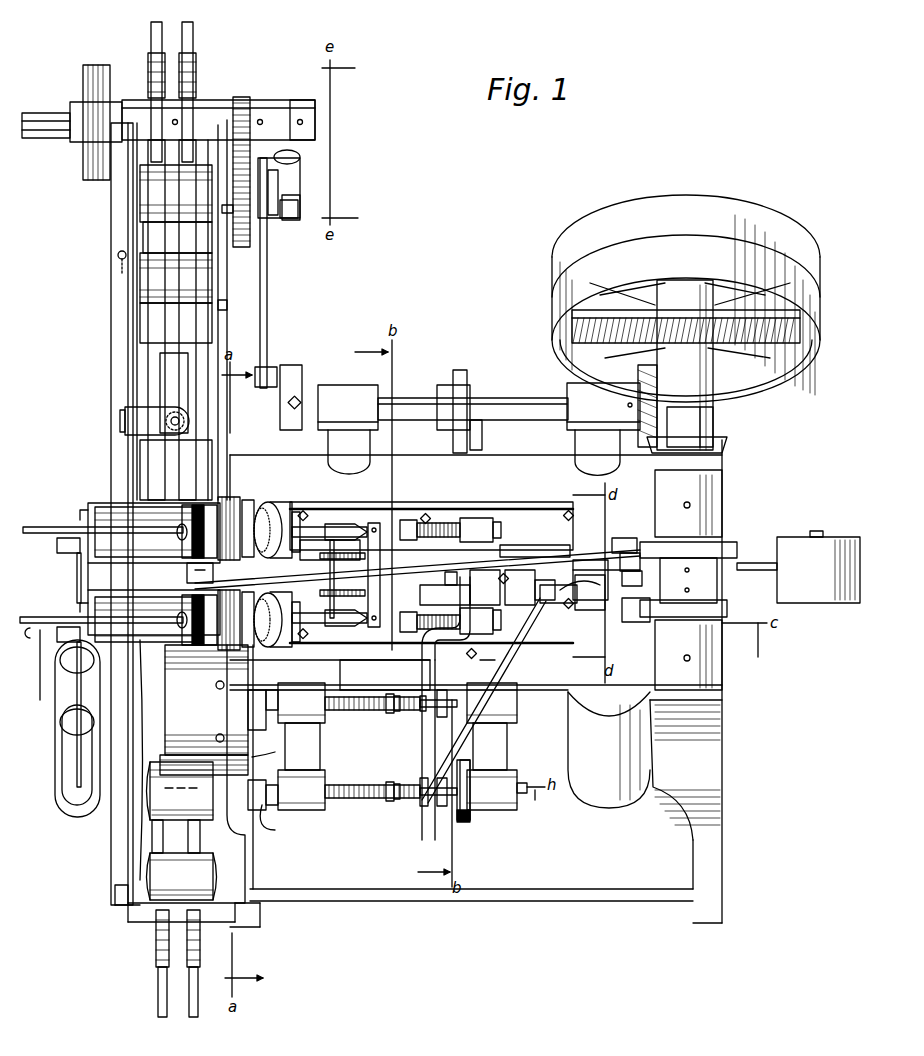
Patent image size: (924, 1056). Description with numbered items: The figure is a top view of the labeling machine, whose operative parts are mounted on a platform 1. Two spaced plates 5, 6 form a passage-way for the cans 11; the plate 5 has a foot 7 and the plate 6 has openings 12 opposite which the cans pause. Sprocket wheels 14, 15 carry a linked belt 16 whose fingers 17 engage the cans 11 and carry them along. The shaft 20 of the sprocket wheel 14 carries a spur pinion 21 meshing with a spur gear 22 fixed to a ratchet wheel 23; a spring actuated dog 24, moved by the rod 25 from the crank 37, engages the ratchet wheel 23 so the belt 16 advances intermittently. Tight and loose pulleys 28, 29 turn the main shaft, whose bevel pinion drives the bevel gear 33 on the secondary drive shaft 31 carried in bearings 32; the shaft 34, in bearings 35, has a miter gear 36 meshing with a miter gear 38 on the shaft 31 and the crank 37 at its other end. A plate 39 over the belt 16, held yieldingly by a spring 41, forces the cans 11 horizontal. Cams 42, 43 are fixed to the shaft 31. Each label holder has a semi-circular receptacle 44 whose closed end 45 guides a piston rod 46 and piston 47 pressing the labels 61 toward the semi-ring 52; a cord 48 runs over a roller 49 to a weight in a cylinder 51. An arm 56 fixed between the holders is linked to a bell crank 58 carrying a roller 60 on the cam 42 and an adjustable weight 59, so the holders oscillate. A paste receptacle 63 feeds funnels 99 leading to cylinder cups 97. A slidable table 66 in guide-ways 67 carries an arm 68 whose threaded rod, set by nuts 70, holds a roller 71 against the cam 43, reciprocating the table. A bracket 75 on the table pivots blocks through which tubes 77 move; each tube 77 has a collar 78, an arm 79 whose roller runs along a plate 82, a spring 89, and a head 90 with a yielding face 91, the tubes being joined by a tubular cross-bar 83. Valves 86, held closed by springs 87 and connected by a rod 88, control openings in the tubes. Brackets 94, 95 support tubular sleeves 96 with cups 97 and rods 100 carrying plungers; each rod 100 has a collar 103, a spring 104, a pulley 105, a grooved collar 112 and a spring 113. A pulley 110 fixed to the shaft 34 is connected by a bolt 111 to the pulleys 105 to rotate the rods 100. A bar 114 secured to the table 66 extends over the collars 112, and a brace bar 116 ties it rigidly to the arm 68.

The platform 1 is at (476, 681).
The plate 5 is at (125, 358).
The plate 6 is at (222, 318).
The foot 7 is at (140, 238).
The cans 11 is at (182, 831).
The openings 12 is at (232, 822).
The sprocket wheel 14 is at (192, 88).
The sprocket wheel 15 is at (156, 938).
The linked belt 16 is at (196, 60).
The fingers 17 is at (193, 30).
The shaft 20 is at (315, 120).
The spur pinion 21 is at (243, 97).
The spur gear 22 is at (237, 235).
The ratchet wheel 23 is at (292, 220).
The spring actuated dog 24 is at (300, 178).
The rod 25 is at (274, 273).
The tight pulley 28 is at (686, 295).
The loose pulley 29 is at (686, 321).
The secondary drive shaft 31 is at (713, 420).
The bearings 32 is at (713, 378).
The bevel gear 33 is at (572, 334).
The shaft 34 is at (530, 398).
The bearings 35 is at (479, 421).
The miter gear 36 is at (636, 404).
The crank 37 is at (292, 365).
The miter gear 38 is at (727, 443).
The plate 39 is at (174, 393).
The spring 41 is at (175, 417).
The cam 42 is at (737, 545).
The cam 43 is at (727, 608).
The semi-circular receptacle 44 is at (97, 503).
The closed end 45 is at (80, 513).
The piston rod 46 is at (101, 565).
The piston 47 is at (186, 545).
The cord 48 is at (77, 568).
The roller 49 is at (52, 618).
The cylinder 51 is at (70, 700).
The semi-ring 52 is at (240, 500).
The arm 56 is at (185, 575).
The bell crank 58 is at (751, 578).
The weight 59 is at (815, 603).
The roller 60 is at (627, 538).
The labels 61 is at (147, 574).
The paste receptacle 63 is at (204, 710).
The slidable table 66 is at (590, 530).
The guide-ways 67 is at (417, 569).
The arm 68 is at (572, 592).
The nuts 70 is at (537, 595).
The roller 71 is at (636, 622).
The bracket 75 is at (445, 593).
The tubes 77 is at (472, 503).
The collar 78 is at (510, 519).
The arm 79 is at (412, 512).
The plate 82 is at (352, 510).
The tubular cross-bar 83 is at (373, 520).
The valve 86 is at (315, 569).
The spring 87 is at (342, 579).
The rod 88 is at (335, 547).
The spring 89 is at (437, 523).
The head 90 is at (280, 510).
The yielding face 91 is at (270, 505).
The bracket 94 is at (325, 745).
The bracket 95 is at (517, 745).
The tubular sleeves 96 is at (282, 763).
The cylinder cup 97 is at (248, 707).
The funnel 99 is at (267, 750).
The rod 100 is at (391, 761).
The collar 103 is at (392, 747).
The spring 104 is at (377, 712).
The pulley 105 is at (470, 660).
The pulley 110 is at (462, 372).
The bolt 111 is at (465, 826).
The grooved faced collar 112 is at (440, 735).
The spring 113 is at (400, 715).
The bar 114 is at (412, 728).
The brace bar 116 is at (488, 700).